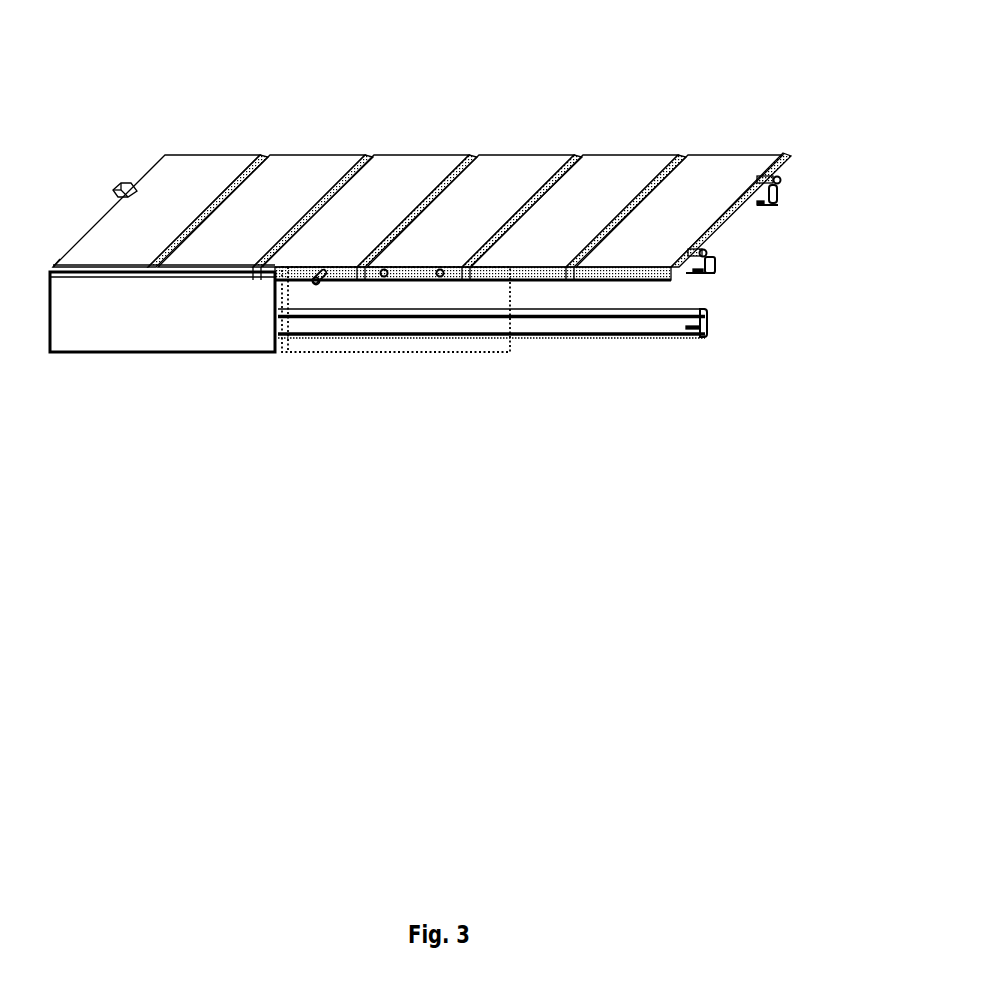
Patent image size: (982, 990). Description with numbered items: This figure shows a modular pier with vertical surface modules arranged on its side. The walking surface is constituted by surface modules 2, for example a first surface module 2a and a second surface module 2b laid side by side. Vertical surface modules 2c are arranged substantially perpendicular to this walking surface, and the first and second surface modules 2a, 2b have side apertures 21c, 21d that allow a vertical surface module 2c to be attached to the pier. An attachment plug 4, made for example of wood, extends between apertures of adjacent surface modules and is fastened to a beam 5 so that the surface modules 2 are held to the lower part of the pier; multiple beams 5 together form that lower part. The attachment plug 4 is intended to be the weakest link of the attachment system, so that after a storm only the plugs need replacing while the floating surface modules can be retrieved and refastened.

The surface modules 2 is at (420, 254).
The first surface module 2a is at (422, 153).
The second surface module 2b is at (194, 176).
The vertical surface module 2c is at (163, 323).
The side aperture 21c is at (385, 270).
The side aperture 21d is at (440, 270).
The attachment plug 4 is at (316, 287).
The beam 5 is at (740, 208).